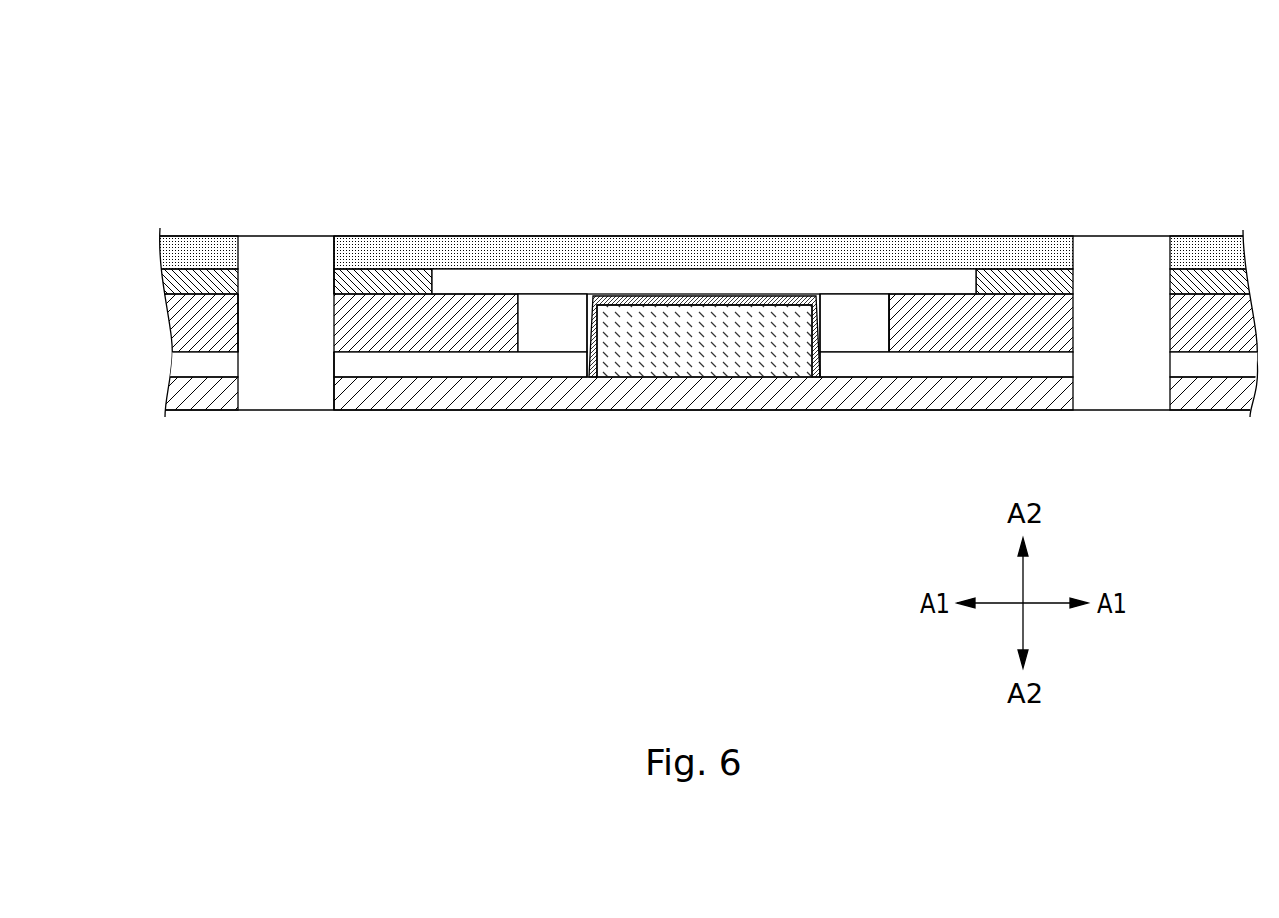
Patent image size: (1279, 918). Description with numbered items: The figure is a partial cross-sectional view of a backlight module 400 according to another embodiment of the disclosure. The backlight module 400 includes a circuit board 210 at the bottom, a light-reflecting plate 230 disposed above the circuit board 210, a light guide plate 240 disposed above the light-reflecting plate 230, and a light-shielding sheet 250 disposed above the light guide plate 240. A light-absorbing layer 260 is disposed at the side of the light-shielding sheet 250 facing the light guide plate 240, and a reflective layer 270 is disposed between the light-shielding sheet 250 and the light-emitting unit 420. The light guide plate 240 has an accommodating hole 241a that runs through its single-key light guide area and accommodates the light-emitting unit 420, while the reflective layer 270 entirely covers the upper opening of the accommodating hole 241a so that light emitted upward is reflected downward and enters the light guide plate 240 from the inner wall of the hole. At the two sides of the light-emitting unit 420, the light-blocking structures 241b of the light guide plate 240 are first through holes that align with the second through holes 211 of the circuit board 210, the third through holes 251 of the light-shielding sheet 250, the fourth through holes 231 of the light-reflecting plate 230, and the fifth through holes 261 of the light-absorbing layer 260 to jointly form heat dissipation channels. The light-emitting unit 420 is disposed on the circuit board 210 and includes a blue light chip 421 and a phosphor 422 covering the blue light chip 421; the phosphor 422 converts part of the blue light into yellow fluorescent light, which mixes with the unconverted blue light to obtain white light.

The backlight module 400 is at (1268, 85).
The light-shielding sheet 250 is at (177, 249).
The light-absorbing layer 260 is at (177, 280).
The reflective layer 270 is at (470, 281).
The light guide plate 240 is at (177, 318).
The light-reflecting plate 230 is at (178, 365).
The circuit board 210 is at (175, 395).
The third through hole 251 is at (357, 244).
The fifth through hole 261 is at (358, 270).
The light-blocking structure 241b is at (215, 348).
The accommodating hole 241a is at (912, 345).
The fourth through hole 231 is at (358, 372).
The second through hole 211 is at (358, 402).
The light-emitting unit 420 is at (692, 411).
The blue light chip 421 is at (672, 363).
The phosphor 422 is at (588, 378).